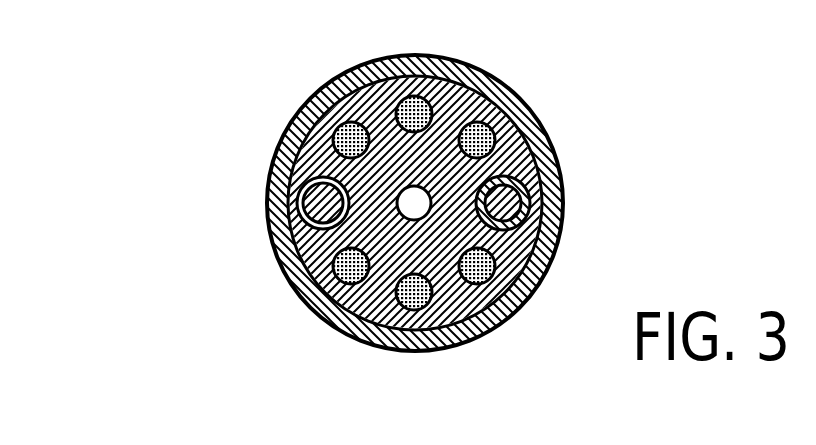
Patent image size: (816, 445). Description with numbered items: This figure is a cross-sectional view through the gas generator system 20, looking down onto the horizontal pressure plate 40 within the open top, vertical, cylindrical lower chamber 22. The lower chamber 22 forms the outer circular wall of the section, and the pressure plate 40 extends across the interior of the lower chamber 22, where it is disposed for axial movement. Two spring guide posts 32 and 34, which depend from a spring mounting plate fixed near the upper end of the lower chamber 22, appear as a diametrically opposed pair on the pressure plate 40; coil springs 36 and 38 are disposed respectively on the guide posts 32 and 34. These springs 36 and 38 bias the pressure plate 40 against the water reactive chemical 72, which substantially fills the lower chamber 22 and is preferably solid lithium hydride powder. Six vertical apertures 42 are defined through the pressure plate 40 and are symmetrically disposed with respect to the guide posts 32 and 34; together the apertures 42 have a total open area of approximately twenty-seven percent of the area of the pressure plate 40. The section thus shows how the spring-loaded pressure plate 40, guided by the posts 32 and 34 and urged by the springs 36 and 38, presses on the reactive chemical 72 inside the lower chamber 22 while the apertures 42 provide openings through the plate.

The gas generator system 20 is at (331, 217).
The lower chamber 22 is at (277, 161).
The spring guide post 32 is at (305, 204).
The spring guide post 34 is at (529, 183).
The coil spring 36 is at (296, 252).
The coil spring 38 is at (533, 221).
The pressure plate 40 is at (450, 300).
The aperture 42 is at (487, 135).
The water reactive chemical 72 is at (413, 97).